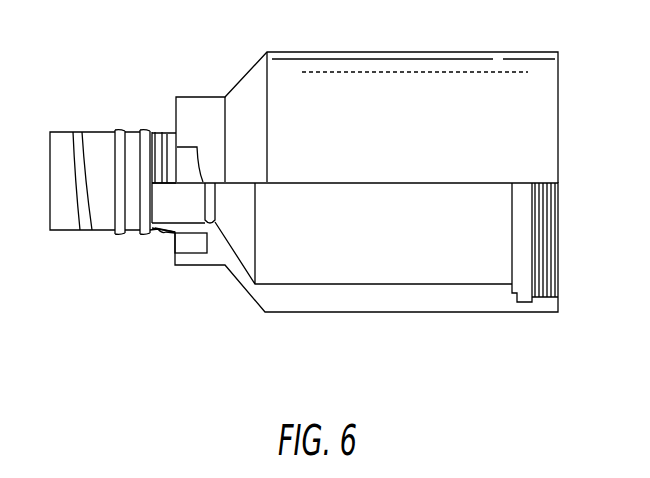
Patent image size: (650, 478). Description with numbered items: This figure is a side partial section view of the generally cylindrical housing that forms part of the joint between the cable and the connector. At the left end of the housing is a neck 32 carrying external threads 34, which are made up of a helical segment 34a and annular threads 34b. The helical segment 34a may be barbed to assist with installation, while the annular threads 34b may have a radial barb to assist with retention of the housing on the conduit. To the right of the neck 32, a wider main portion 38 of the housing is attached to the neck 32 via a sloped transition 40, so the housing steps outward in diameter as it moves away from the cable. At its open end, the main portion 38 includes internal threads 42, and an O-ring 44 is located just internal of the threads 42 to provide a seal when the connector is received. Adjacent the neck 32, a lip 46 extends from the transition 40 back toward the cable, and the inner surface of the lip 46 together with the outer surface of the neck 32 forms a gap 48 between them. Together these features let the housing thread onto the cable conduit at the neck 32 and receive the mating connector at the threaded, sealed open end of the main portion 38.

The neck 32 is at (98, 222).
The external threads 34 is at (108, 117).
The helical segment 34a is at (82, 130).
The annular threads 34b is at (152, 130).
The main portion 38 is at (440, 303).
The sloped transition 40 is at (245, 74).
The internal threads 42 is at (540, 247).
The O-ring 44 is at (523, 298).
The lip 46 is at (188, 258).
The gap 48 is at (165, 243).